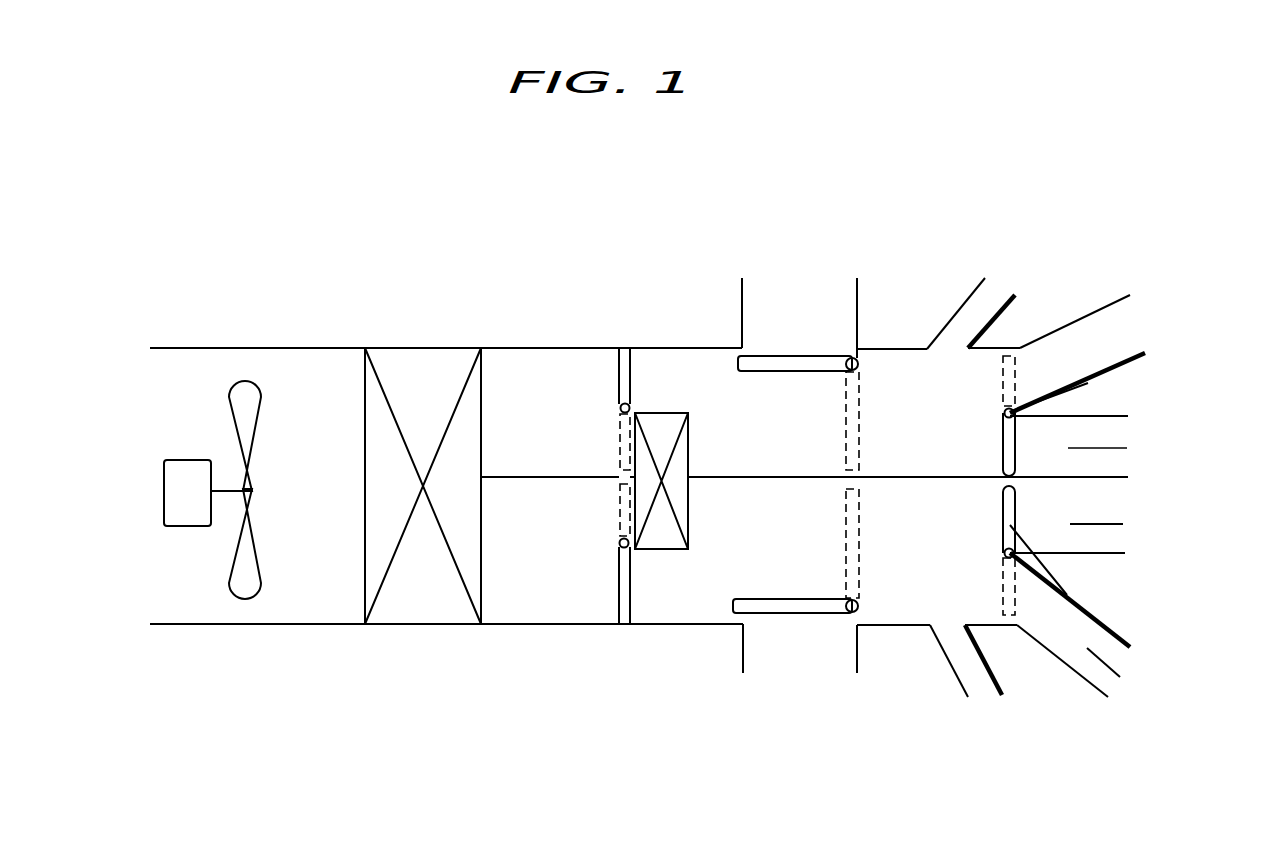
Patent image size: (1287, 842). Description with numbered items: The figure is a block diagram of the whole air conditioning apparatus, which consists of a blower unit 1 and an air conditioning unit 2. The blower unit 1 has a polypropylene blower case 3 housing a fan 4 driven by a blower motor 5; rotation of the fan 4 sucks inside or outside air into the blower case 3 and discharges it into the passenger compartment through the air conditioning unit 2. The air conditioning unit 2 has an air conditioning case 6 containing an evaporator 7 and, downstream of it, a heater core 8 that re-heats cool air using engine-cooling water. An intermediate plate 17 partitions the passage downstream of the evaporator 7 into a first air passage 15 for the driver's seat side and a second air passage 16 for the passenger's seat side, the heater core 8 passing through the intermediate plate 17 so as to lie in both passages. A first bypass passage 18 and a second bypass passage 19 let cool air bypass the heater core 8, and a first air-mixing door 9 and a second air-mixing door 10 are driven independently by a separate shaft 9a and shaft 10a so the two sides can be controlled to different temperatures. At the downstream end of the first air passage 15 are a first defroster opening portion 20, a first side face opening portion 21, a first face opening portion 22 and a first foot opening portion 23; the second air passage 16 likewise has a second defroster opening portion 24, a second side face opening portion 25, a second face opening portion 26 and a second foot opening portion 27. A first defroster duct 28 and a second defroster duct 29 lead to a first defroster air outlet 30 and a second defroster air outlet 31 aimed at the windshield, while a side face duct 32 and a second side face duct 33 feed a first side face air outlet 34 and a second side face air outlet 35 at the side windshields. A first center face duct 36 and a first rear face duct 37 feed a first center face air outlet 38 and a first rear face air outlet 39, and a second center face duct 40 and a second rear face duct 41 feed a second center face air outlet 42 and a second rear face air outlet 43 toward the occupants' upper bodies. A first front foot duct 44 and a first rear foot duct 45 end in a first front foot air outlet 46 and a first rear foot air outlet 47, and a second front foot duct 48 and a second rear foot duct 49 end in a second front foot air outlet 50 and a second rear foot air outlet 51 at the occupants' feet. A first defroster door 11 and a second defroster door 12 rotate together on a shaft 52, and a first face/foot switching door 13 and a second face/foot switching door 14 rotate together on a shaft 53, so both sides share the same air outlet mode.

The blower unit 1 is at (258, 316).
The air conditioning unit 2 is at (669, 240).
The blower case 3 is at (300, 624).
The fan 4 is at (245, 592).
The blower motor 5 is at (183, 513).
The air conditioning case 6 is at (700, 624).
The evaporator 7 is at (418, 603).
The heater core 8 is at (622, 487).
The first air-mixing door 9 is at (618, 373).
The shaft of the first air-mixing door 9a is at (620, 407).
The second air-mixing door 10 is at (622, 593).
The shaft of the second air-mixing door 10a is at (621, 545).
The first defroster door 11 is at (792, 354).
The second defroster door 12 is at (822, 607).
The first face/foot switching door 13 is at (1115, 393).
The second face/foot switching door 14 is at (1012, 556).
The first air passage 15 is at (703, 415).
The second air passage 16 is at (722, 558).
The intermediate plate 17 is at (517, 470).
The first bypass passage 18 is at (650, 372).
The second bypass passage 19 is at (660, 597).
The first defroster opening portion 20 is at (762, 340).
The first side face opening portion 21 is at (955, 338).
The first face opening portion 22 is at (1020, 387).
The first foot opening portion 23 is at (1022, 453).
The second defroster opening portion 24 is at (773, 623).
The second side face opening portion 25 is at (953, 622).
The second face opening portion 26 is at (1017, 598).
The second foot opening portion 27 is at (1018, 510).
The first defroster duct 28 is at (835, 300).
The second defroster duct 29 is at (847, 638).
The first defroster air outlet 30 is at (776, 290).
The second defroster air outlet 31 is at (805, 648).
The side face duct 32 is at (973, 310).
The second side face duct 33 is at (972, 668).
The first side face air outlet 34 is at (993, 293).
The second side face air outlet 35 is at (982, 690).
The first center face duct 36 is at (1097, 328).
The first rear face duct 37 is at (1108, 357).
The first center face air outlet 38 is at (1090, 343).
The first rear face air outlet 39 is at (1130, 338).
The second center face duct 40 is at (1092, 665).
The second rear face duct 41 is at (1100, 633).
The second center face air outlet 42 is at (1110, 680).
The second rear face air outlet 43 is at (1123, 657).
The first front foot duct 44 is at (1010, 440).
The first rear foot duct 45 is at (1105, 473).
The first front foot air outlet 46 is at (1117, 430).
The first rear foot air outlet 47 is at (1118, 457).
The second front foot duct 48 is at (1092, 537).
The second rear foot duct 49 is at (1092, 495).
The second front foot air outlet 50 is at (1117, 537).
The second rear foot air outlet 51 is at (1112, 515).
The shaft 52 is at (860, 350).
The shaft 53 is at (1088, 383).